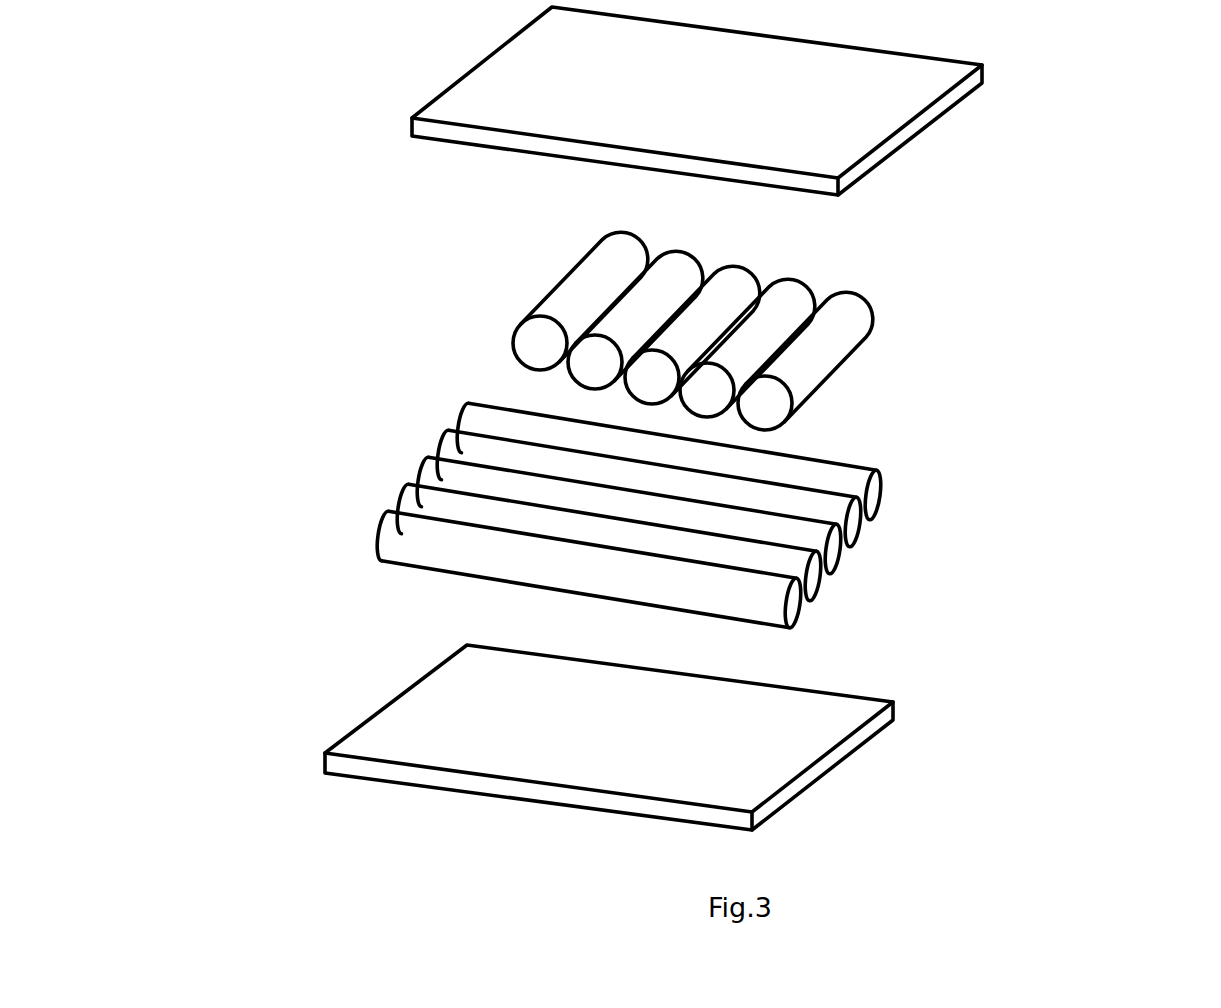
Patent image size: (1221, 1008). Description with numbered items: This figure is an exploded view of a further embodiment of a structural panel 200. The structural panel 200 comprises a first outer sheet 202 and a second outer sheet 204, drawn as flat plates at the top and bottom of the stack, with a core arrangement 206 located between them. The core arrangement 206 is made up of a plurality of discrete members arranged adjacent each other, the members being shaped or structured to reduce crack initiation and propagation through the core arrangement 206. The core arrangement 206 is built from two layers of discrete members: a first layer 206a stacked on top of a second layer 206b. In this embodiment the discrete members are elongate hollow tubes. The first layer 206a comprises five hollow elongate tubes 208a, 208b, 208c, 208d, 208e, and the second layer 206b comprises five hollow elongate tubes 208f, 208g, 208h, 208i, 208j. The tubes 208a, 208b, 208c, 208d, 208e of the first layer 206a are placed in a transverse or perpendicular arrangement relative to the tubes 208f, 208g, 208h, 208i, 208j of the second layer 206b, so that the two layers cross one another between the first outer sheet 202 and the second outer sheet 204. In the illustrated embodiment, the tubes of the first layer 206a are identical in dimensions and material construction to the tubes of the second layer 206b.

The structural panel 200 is at (1070, 263).
The first outer sheet 202 is at (907, 125).
The second outer sheet 204 is at (817, 768).
The core arrangement 206 is at (255, 206).
The first layer 206a is at (507, 205).
The second layer 206b is at (385, 393).
The hollow elongate tube 208a is at (582, 285).
The hollow elongate tube 208b is at (675, 290).
The hollow elongate tube 208c is at (727, 300).
The hollow elongate tube 208d is at (795, 312).
The hollow elongate tube 208e is at (817, 337).
The hollow elongate tube 208f is at (792, 608).
The hollow elongate tube 208g is at (817, 588).
The hollow elongate tube 208h is at (828, 553).
The hollow elongate tube 208i is at (848, 527).
The hollow elongate tube 208j is at (867, 497).